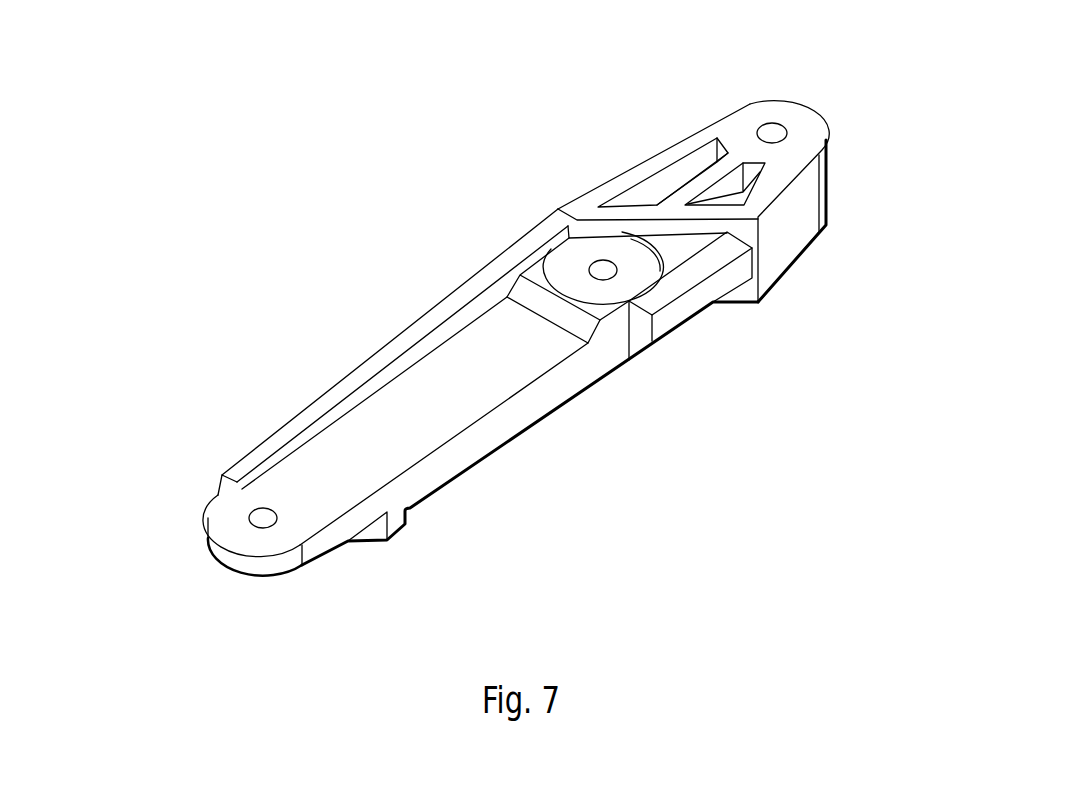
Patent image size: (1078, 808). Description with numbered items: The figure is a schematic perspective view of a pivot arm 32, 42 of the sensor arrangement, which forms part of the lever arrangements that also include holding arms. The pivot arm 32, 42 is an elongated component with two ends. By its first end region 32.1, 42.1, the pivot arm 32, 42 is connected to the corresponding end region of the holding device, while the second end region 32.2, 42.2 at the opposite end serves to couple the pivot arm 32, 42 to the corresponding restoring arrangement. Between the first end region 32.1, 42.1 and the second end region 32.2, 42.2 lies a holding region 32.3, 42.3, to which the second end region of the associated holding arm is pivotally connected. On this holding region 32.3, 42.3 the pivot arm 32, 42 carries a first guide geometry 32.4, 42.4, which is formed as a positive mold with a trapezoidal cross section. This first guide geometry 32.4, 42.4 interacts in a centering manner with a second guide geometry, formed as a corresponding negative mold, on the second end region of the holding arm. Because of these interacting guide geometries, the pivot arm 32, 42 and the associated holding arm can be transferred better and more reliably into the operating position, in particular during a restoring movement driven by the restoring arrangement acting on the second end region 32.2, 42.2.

The pivot arm 32 is at (495, 298).
The pivot arm 42 is at (495, 298).
The first end region 32.1 is at (168, 528).
The first end region 42.1 is at (226, 513).
The second end region 32.2 is at (776, 161).
The second end region 42.2 is at (792, 120).
The holding region 32.3 is at (604, 219).
The holding region 42.3 is at (538, 190).
The first guide geometry 32.4 is at (742, 321).
The first guide geometry 42.4 is at (696, 297).